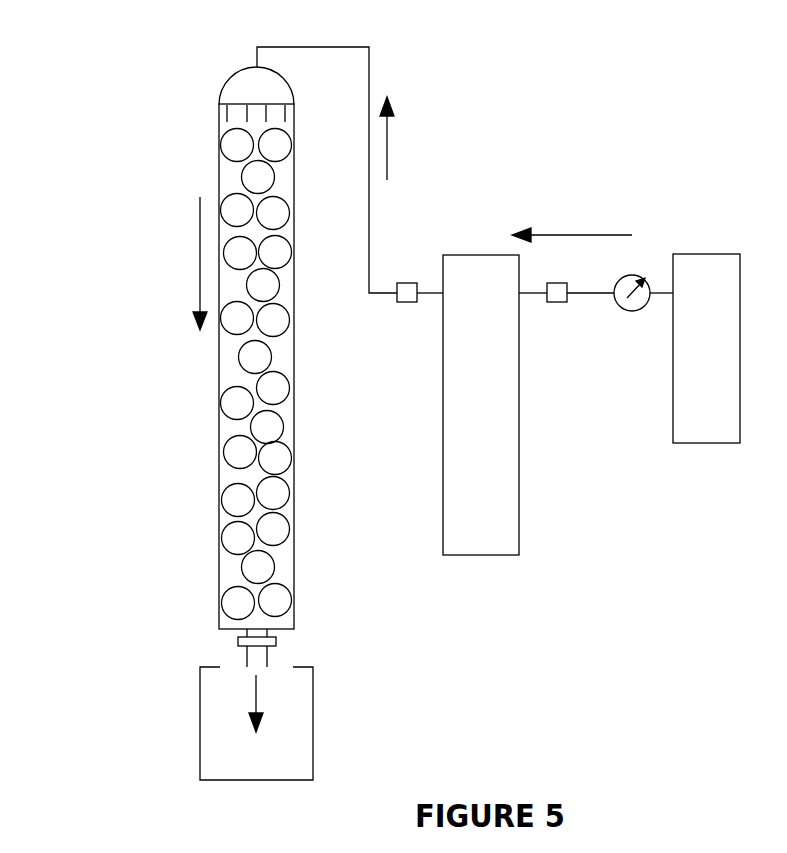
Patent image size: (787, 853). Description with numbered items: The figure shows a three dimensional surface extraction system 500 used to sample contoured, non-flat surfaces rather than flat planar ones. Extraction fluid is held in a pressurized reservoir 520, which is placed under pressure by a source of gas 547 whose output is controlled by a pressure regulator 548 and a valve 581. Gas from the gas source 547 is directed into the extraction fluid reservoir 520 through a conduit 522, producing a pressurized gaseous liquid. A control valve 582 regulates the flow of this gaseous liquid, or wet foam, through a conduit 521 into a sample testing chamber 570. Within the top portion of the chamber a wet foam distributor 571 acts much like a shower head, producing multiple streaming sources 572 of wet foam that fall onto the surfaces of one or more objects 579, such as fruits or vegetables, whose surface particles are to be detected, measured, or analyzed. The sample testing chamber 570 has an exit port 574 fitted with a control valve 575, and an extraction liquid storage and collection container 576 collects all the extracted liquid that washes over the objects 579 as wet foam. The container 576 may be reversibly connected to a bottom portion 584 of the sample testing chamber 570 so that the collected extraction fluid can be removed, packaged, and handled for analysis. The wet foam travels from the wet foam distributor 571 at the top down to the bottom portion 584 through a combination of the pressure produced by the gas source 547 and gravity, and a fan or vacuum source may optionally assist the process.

The surface extraction system 500 is at (68, 123).
The pressurized reservoir 520 is at (443, 478).
The conduit 521 is at (313, 47).
The conduit 522 is at (594, 293).
The source of gas 547 is at (673, 405).
The pressure regulator 548 is at (632, 275).
The sample testing chamber 570 is at (219, 437).
The wet foam distributor 571 is at (228, 80).
The streaming sources 572 is at (228, 110).
The exit port 574 is at (268, 656).
The control valve 575 is at (238, 641).
The extraction liquid storage and collection container 576 is at (200, 713).
The objects 579 is at (230, 550).
The valve 581 is at (557, 302).
The control valve 582 is at (405, 302).
The bottom portion 584 is at (294, 612).